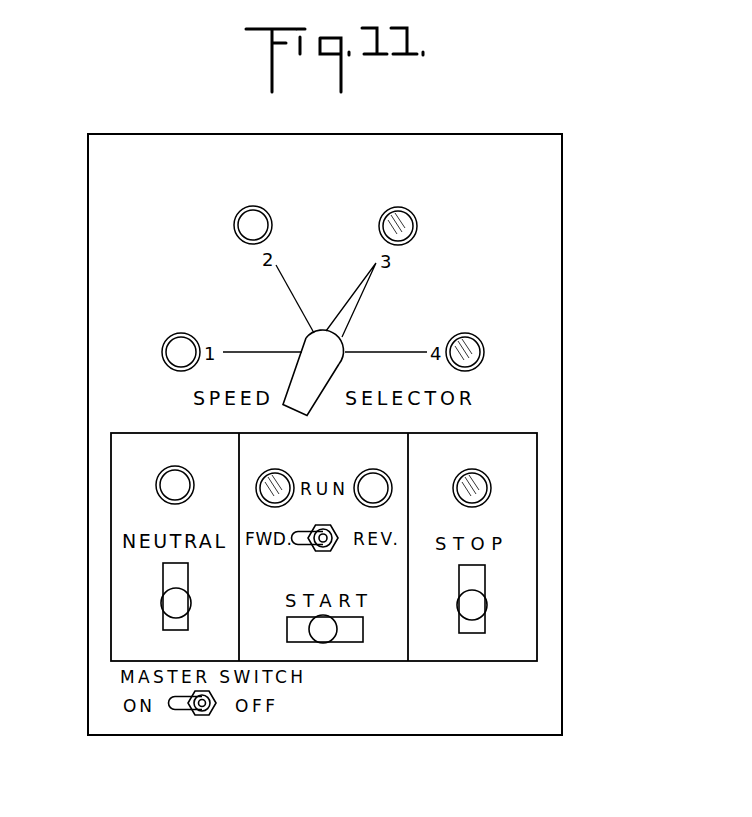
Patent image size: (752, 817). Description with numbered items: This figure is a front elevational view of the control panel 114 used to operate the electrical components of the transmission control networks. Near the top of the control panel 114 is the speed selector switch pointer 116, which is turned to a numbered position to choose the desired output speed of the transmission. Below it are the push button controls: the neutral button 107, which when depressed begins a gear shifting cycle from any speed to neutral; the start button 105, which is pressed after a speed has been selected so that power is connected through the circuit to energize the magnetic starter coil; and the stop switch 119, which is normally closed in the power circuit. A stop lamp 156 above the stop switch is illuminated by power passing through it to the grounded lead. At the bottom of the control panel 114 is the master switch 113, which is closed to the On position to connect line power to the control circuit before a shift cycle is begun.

The control panel 114 is at (541, 287).
The speed selector switch pointer 116 is at (318, 372).
The stop lamp 156 is at (486, 484).
The stop switch 119 is at (478, 605).
The neutral button 107 is at (172, 601).
The start button 105 is at (326, 639).
The master switch 113 is at (192, 710).